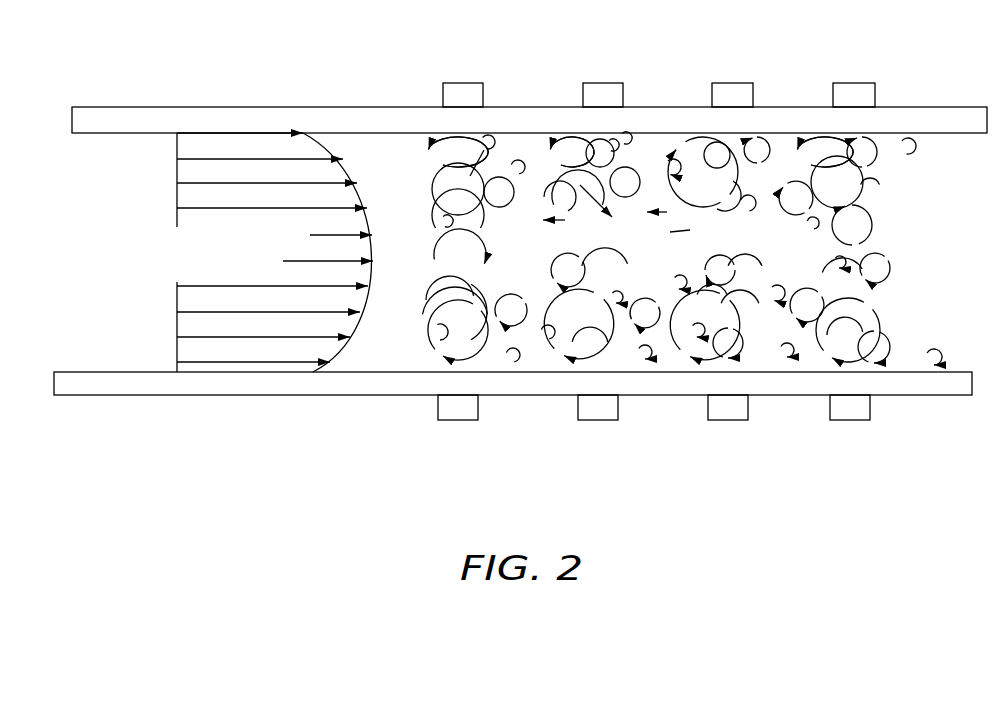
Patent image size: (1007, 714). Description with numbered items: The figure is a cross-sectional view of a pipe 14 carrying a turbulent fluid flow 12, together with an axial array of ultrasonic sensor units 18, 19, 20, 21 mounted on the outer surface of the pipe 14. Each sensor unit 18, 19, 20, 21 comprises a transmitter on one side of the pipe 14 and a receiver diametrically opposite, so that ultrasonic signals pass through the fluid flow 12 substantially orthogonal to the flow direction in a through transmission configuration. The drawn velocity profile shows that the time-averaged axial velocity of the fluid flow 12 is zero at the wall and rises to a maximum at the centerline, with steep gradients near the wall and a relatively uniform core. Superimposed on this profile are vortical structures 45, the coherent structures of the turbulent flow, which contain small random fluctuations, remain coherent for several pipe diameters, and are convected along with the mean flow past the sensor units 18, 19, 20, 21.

The fluid flow 12 is at (380, 160).
The pipe 14 is at (943, 107).
The ultrasonic sensor unit 18 is at (460, 82).
The ultrasonic sensor unit 19 is at (600, 82).
The ultrasonic sensor unit 20 is at (735, 82).
The ultrasonic sensor unit 21 is at (853, 82).
The vortical structures 45 is at (865, 182).